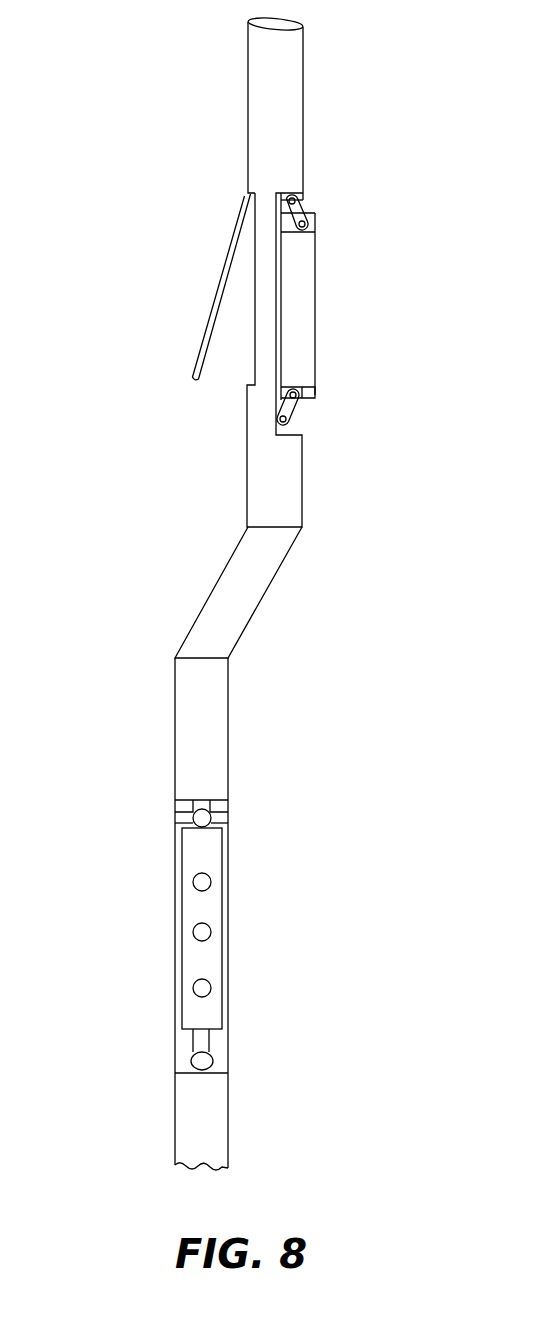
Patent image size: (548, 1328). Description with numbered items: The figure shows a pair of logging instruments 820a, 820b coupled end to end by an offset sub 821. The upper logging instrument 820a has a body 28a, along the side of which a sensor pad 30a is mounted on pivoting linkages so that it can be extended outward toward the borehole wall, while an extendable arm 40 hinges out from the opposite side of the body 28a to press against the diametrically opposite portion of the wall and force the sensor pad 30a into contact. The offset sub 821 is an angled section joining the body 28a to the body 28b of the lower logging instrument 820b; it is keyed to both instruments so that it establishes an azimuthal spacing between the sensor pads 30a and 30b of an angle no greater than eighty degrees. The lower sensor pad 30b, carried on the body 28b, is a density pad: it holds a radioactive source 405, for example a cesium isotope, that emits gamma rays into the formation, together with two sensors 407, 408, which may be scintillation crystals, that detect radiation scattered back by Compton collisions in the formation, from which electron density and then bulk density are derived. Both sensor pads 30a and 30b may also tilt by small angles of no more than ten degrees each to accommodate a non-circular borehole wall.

The body 28a is at (248, 100).
The logging instrument 820a is at (335, 122).
The extendable arm 40 is at (202, 328).
The sensor pad 30a is at (315, 382).
The offset sub 821 is at (265, 595).
The logging instrument 820b is at (148, 732).
The body 28b is at (228, 772).
The radioactive source 405 is at (193, 882).
The sensor 407 is at (193, 932).
The sensor 408 is at (193, 988).
The sensor pad 30b is at (222, 1018).